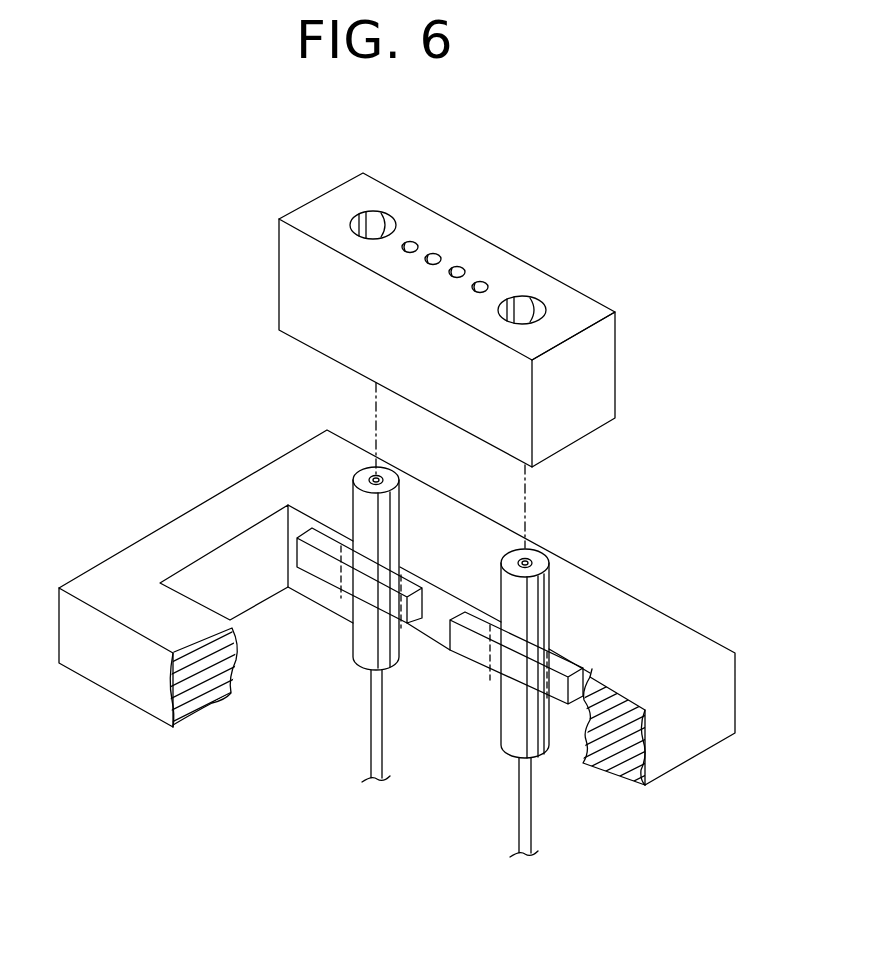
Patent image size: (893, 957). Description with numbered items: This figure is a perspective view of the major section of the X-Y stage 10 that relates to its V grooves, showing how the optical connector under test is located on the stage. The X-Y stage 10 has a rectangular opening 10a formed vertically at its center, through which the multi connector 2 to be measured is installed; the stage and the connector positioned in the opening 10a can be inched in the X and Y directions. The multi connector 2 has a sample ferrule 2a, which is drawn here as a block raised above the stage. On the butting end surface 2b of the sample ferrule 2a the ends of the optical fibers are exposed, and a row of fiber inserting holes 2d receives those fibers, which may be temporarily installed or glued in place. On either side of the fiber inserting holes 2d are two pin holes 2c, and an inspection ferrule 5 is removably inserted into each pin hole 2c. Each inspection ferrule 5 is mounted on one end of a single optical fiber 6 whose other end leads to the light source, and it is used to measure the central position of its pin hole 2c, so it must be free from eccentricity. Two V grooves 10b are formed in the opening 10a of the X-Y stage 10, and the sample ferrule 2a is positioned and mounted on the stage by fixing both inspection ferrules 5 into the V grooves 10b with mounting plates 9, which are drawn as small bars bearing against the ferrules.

The multi connector 2 is at (476, 300).
The sample ferrule 2a is at (593, 365).
The butting end surface 2b is at (312, 208).
The pin hole 2c is at (387, 213).
The fiber inserting hole 2d is at (457, 270).
The inspection ferrule 5 is at (358, 510).
The single optical fiber 6 is at (377, 478).
The mounting plate 9 is at (313, 560).
The X-Y stage 10 is at (431, 625).
The rectangular opening 10a is at (205, 563).
The V groove 10b is at (360, 541).